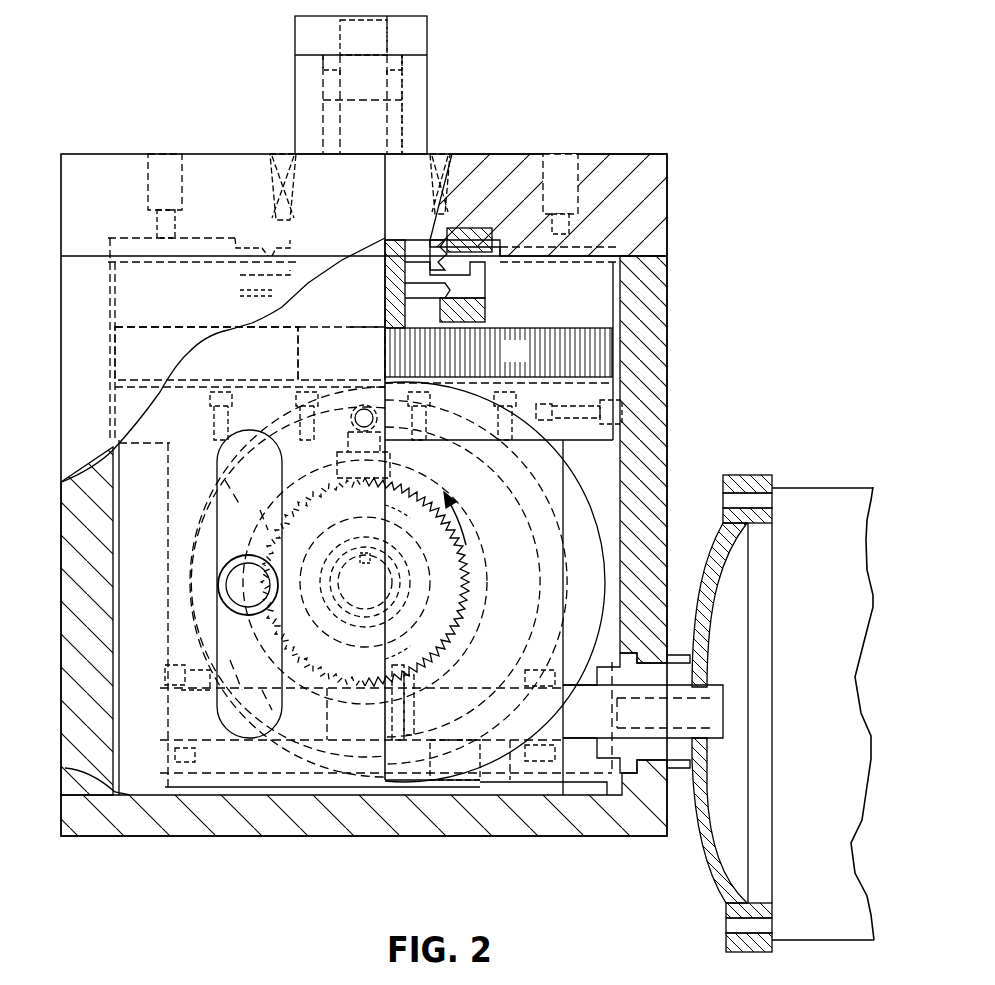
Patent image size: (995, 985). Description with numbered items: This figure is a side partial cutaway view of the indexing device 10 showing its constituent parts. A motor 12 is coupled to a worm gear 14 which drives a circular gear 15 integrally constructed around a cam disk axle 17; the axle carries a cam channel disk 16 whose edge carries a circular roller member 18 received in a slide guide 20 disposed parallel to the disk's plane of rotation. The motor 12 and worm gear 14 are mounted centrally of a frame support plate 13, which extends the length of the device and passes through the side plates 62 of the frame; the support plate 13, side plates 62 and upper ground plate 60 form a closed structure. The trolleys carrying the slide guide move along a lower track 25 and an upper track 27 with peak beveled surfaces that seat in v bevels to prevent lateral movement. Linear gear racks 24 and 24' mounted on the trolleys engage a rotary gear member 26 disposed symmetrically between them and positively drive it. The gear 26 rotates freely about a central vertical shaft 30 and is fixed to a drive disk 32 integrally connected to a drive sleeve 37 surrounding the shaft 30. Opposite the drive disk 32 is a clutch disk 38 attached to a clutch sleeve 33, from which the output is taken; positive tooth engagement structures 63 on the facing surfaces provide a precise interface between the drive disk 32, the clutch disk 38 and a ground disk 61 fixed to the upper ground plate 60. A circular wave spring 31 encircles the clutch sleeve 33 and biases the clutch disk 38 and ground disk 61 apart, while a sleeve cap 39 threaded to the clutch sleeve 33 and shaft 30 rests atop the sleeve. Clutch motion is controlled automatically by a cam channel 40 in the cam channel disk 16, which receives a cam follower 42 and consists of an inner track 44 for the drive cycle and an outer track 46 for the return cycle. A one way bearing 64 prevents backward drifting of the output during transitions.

The indexing device 10 is at (183, 98).
The motor 12 is at (813, 649).
The frame support plate 13 is at (300, 822).
The worm gear 14 is at (400, 705).
The circular gear 15 is at (452, 572).
The cam channel disk 16 is at (530, 472).
The cam disk axle 17 is at (378, 594).
The circular roller member 18 is at (246, 555).
The slide guide 20 is at (230, 662).
The linear gear rack 24 is at (499, 384).
The linear gear rack 24' is at (250, 357).
The lower track 25 is at (66, 768).
The rotary gear member 26 is at (392, 354).
The upper track 27 is at (608, 247).
The vertical shaft 30 is at (362, 128).
The circular wave spring 31 is at (440, 248).
The drive disk 32 is at (255, 310).
The clutch sleeve 33 is at (414, 128).
The drive sleeve 37 is at (400, 128).
The clutch disk 38 is at (255, 279).
The sleeve cap 39 is at (418, 30).
The cam channel 40 is at (540, 505).
The cam follower 42 is at (372, 430).
The inner track 44 is at (274, 673).
The outer track 46 is at (550, 600).
The upper ground plate 60 is at (628, 190).
The ground disk 61 is at (252, 232).
The side plate 62 is at (648, 447).
The positive tooth engagement structures 63 is at (484, 258).
The one way bearing 64 is at (450, 160).